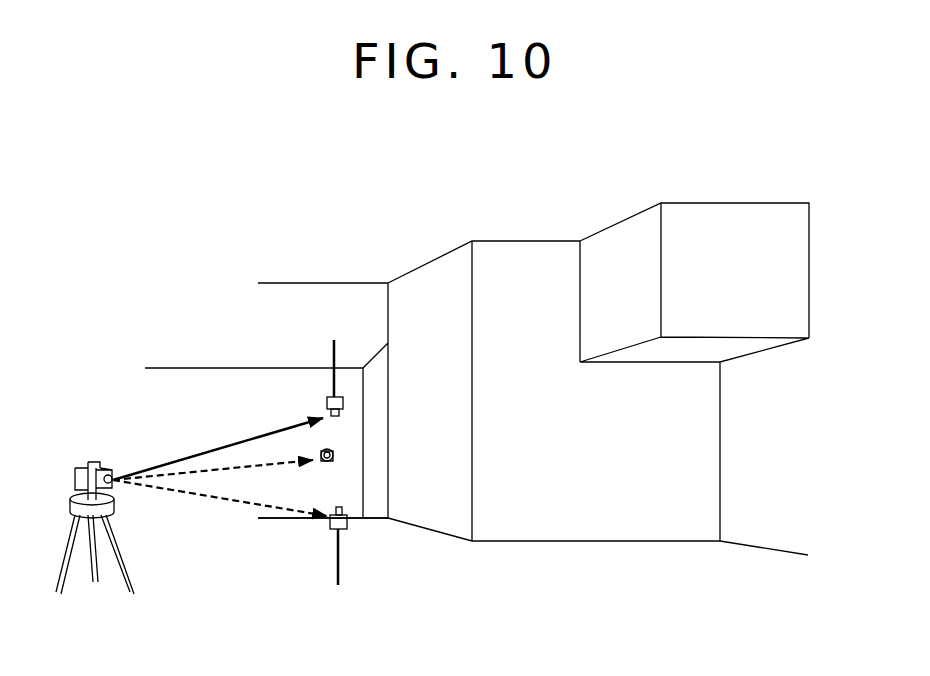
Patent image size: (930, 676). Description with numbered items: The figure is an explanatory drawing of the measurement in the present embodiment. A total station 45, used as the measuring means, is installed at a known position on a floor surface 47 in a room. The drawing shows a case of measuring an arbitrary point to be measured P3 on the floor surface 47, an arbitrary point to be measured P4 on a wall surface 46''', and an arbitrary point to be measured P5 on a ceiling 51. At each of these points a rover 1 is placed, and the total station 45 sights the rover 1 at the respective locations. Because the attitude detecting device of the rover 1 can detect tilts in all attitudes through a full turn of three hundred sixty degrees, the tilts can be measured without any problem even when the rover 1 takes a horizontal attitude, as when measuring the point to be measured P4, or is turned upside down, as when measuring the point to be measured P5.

The rover 1 is at (327, 386).
The total station 45 is at (75, 482).
The wall surface 46''' is at (220, 458).
The floor surface 47 is at (272, 560).
The ceiling 51 is at (337, 293).
The point to be measured P3 is at (338, 585).
The point to be measured P4 is at (306, 470).
The point to be measured P5 is at (334, 341).